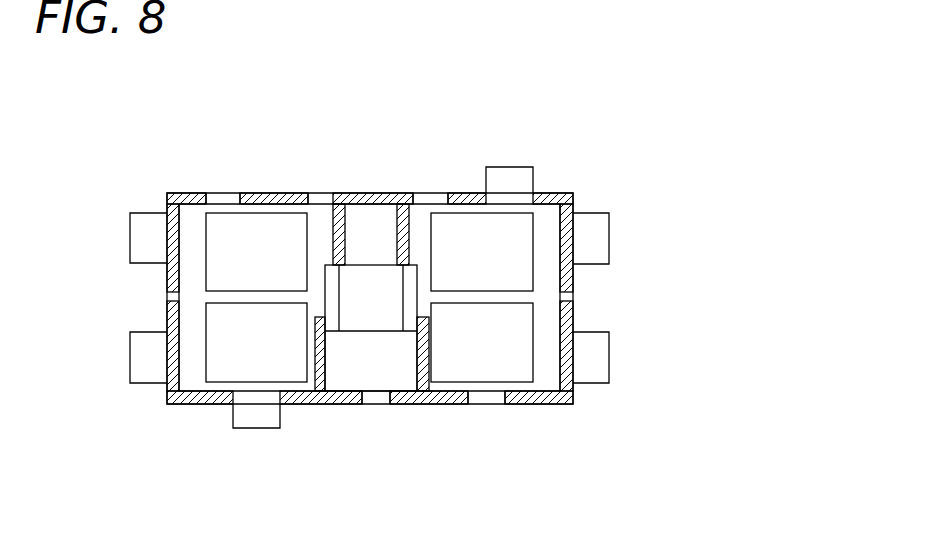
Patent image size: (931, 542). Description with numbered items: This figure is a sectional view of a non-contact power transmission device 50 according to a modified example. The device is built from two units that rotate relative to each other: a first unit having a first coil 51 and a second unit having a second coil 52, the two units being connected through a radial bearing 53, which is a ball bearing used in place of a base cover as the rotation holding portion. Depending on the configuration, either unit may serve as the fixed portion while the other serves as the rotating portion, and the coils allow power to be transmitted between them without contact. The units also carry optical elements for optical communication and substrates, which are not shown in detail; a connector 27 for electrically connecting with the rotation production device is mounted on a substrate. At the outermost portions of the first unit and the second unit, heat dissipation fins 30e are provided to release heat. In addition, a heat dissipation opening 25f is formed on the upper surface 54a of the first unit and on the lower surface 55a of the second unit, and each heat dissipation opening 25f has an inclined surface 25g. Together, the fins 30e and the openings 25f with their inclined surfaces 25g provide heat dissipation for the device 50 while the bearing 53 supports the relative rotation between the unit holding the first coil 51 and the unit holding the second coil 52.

The heat dissipation opening 25f is at (220, 192).
The inclined surface 25g is at (238, 192).
The connector 27 is at (533, 170).
The heat dissipation fins 30e is at (137, 229).
The non-contact power transmission device 50 is at (471, 118).
The first coil 51 is at (262, 358).
The second coil 52 is at (245, 237).
The radial bearing 53 is at (332, 302).
The upper surface of the first unit 54a is at (472, 192).
The lower surface of the second unit 55a is at (545, 405).